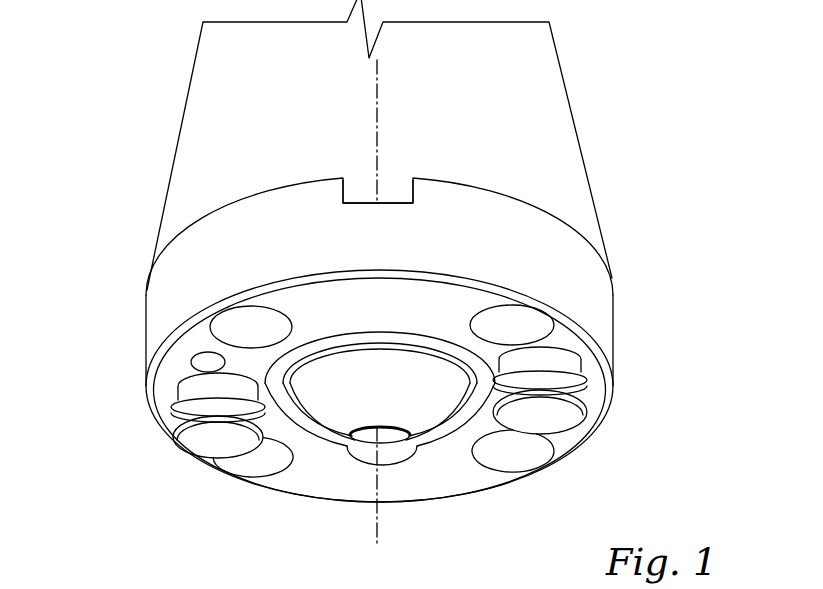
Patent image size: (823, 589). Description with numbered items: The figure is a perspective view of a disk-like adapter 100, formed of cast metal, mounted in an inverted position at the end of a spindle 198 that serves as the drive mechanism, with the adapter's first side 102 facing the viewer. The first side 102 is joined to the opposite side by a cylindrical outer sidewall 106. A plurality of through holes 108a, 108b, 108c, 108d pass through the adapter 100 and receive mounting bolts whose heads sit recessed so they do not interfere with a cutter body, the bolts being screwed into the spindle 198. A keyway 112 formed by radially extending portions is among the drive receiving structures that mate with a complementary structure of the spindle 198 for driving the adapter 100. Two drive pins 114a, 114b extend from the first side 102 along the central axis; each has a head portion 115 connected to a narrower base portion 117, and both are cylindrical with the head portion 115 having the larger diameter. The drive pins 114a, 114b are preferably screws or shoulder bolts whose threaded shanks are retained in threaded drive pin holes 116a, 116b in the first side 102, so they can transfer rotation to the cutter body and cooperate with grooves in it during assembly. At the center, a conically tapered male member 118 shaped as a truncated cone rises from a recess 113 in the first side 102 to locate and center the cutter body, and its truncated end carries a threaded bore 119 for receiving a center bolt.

The adapter 100 is at (646, 297).
The first side 102 is at (317, 308).
The cylindrical outer sidewall 106 is at (533, 256).
The through hole 108a is at (253, 462).
The through hole 108b is at (513, 455).
The through hole 108c is at (525, 324).
The through hole 108d is at (233, 327).
The keyway 112 is at (397, 185).
The recess 113 is at (478, 400).
The drive pin 114a is at (147, 430).
The drive pin 114b is at (598, 409).
The head portion 115 is at (202, 452).
The threaded drive pin hole 116a is at (197, 390).
The threaded drive pin hole 116b is at (542, 362).
The base portion 117 is at (187, 391).
The conically tapered male member 118 is at (403, 393).
The threaded bore 119 is at (366, 455).
The spindle 198 is at (547, 115).